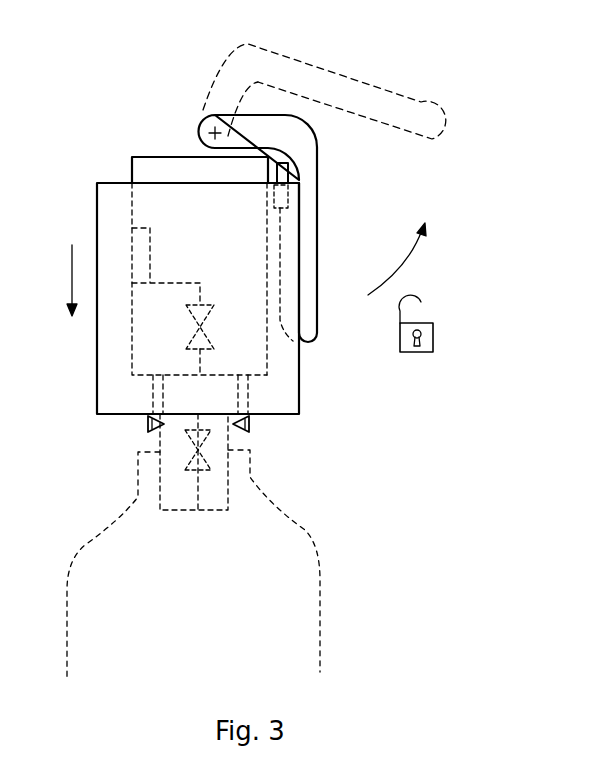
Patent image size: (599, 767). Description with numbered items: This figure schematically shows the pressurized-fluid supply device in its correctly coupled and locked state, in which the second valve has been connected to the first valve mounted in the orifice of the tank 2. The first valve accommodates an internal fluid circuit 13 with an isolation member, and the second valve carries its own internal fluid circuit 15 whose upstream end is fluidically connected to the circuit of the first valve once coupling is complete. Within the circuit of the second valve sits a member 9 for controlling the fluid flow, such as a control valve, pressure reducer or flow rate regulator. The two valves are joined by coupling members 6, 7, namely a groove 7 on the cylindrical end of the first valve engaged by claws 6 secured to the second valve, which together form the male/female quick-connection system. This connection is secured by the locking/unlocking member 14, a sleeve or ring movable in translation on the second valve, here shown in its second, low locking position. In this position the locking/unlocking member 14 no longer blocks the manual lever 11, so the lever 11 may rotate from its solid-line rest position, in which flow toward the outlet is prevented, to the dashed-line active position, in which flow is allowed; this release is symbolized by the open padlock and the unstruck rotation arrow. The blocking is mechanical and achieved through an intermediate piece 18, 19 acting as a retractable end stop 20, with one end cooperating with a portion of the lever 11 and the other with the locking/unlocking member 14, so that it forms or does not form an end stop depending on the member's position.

The tank 2 is at (148, 172).
The claws 6 is at (163, 422).
The groove 7 is at (241, 424).
The member for controlling the fluid flow 9 is at (203, 317).
The lever 11 is at (318, 185).
The internal fluid circuit 13 is at (198, 490).
The locking/unlocking member 14 is at (97, 352).
The internal fluid circuit 15 is at (130, 222).
The intermediate piece 18 is at (287, 178).
The intermediate piece 19 is at (281, 196).
The retractable end stop 20 is at (286, 274).